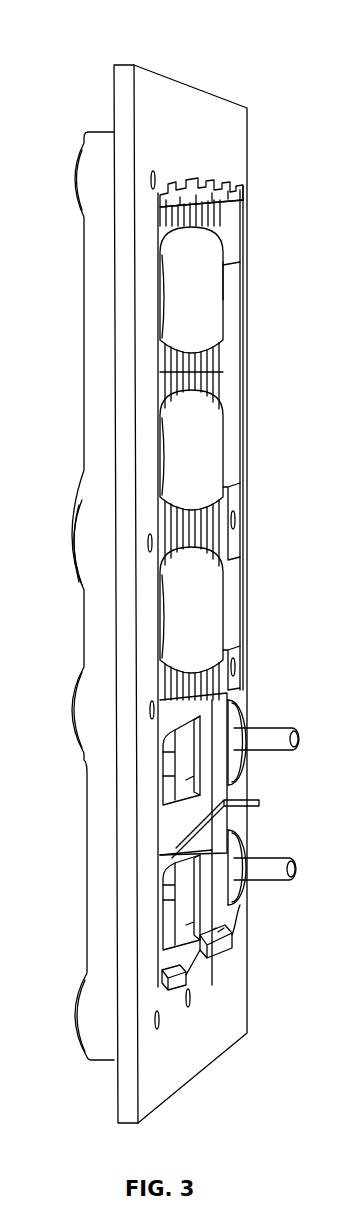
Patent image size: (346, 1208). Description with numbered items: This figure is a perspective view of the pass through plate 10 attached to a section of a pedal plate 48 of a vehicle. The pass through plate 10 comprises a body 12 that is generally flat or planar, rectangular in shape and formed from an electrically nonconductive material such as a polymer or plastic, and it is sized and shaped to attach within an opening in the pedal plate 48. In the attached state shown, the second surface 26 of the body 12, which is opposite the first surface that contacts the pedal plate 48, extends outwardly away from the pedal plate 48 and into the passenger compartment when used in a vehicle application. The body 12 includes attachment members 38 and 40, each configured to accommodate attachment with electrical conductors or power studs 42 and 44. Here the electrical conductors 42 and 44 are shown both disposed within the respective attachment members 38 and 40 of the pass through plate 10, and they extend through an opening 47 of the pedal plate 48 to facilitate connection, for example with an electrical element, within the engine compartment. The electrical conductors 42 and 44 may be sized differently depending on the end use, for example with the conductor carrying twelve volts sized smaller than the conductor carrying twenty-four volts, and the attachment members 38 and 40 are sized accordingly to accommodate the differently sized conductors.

The pass through plate 10 is at (265, 49).
The body 12 is at (102, 273).
The second surface 26 is at (84, 637).
The attachment member 38 is at (243, 893).
The attachment member 40 is at (239, 716).
The electrical conductor 42 is at (266, 858).
The electrical conductor 44 is at (267, 732).
The opening 47 is at (157, 277).
The pedal plate 48 is at (221, 151).